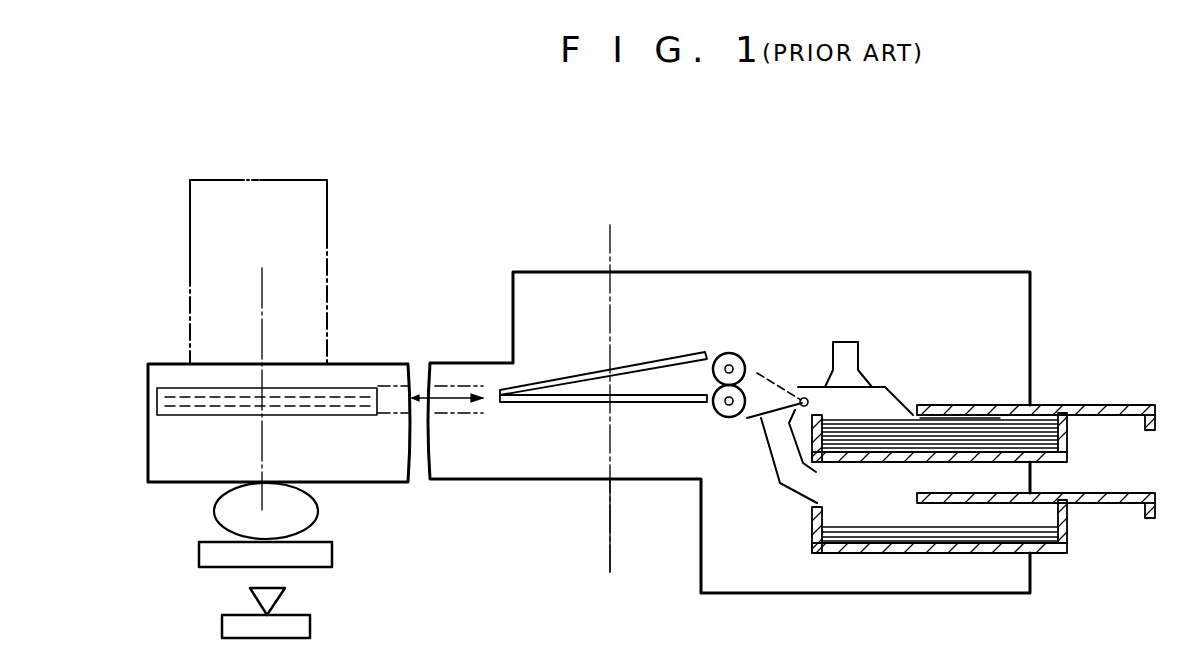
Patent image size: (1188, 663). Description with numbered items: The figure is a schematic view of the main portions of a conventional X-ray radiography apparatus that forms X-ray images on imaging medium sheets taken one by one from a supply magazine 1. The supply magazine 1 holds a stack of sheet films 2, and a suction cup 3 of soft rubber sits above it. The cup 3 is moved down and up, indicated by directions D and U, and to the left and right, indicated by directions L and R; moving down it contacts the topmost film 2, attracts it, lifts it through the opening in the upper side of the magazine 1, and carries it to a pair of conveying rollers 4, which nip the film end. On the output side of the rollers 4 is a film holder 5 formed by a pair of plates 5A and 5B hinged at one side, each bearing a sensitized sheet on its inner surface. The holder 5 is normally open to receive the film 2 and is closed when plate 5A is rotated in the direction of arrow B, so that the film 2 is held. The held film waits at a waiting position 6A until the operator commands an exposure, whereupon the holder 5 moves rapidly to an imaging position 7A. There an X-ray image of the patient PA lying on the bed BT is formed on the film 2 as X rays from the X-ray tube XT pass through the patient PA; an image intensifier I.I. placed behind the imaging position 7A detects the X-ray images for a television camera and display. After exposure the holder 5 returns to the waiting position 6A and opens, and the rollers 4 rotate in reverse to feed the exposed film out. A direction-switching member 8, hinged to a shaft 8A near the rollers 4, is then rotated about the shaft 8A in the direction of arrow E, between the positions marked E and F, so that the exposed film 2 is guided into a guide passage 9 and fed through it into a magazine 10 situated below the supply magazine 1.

The image intensifier I.I. is at (327, 232).
The imaging position 7A is at (262, 443).
The patient PA is at (318, 512).
The bed BT is at (332, 552).
The X-ray tube XT is at (310, 628).
The film holder 5 is at (603, 340).
The plate 5A is at (578, 332).
The plate 5B is at (553, 404).
The waiting position 6A is at (608, 522).
The conveying rollers 4 is at (729, 336).
The arrow B is at (695, 384).
The direction-switching member 8 is at (795, 413).
The shaft 8A is at (808, 402).
The guide passage 9 is at (779, 455).
The suction cup 3 is at (846, 342).
The sheet films 2 is at (870, 426).
The supply magazine 1 is at (1068, 436).
The magazine 10 is at (1068, 526).
The left direction L is at (815, 352).
The right direction R is at (815, 352).
The up direction U is at (886, 378).
The down direction D is at (886, 378).
The arrow E is at (773, 405).
The flapper position F is at (773, 407).